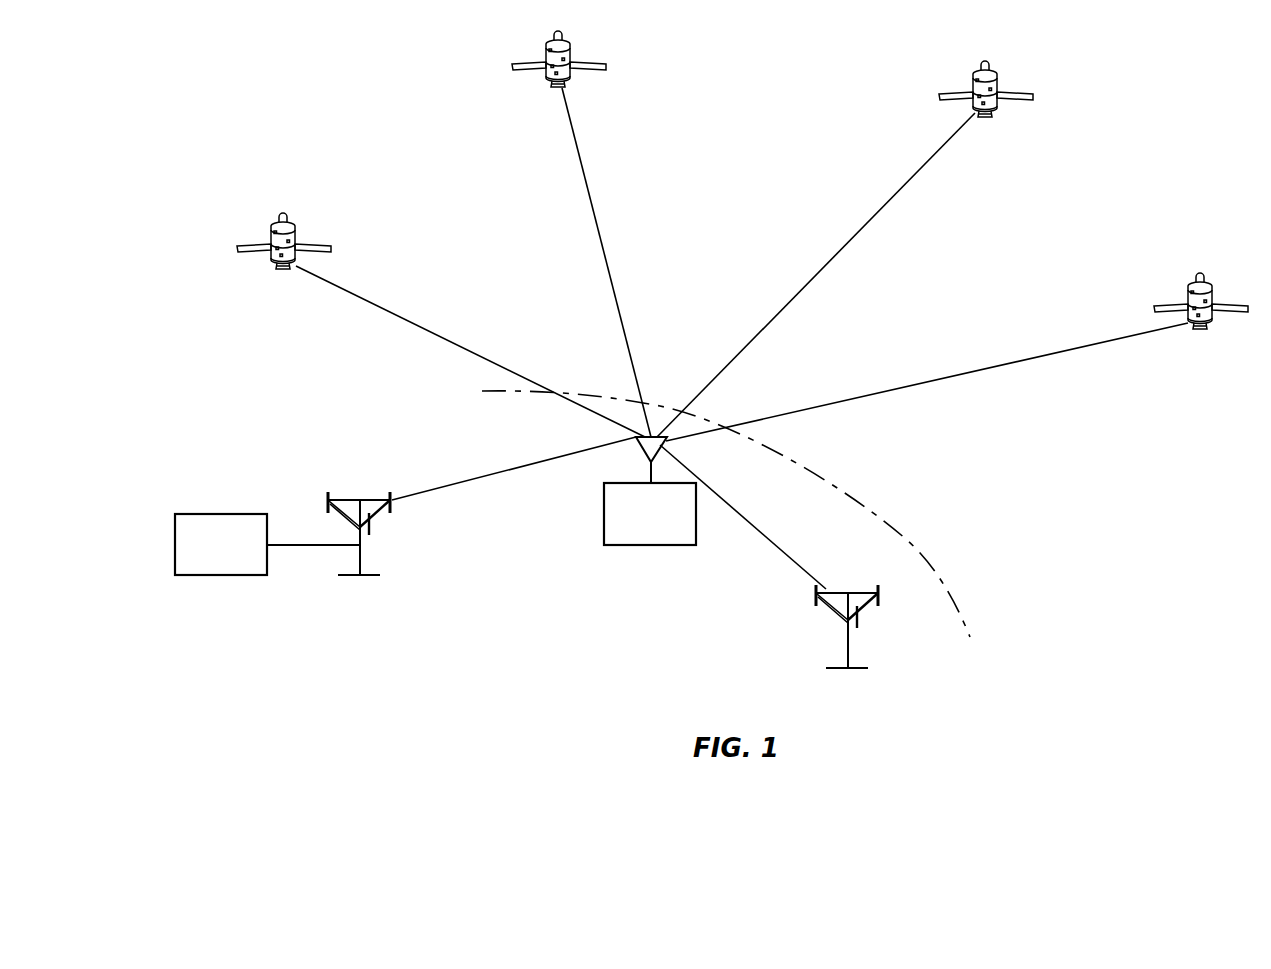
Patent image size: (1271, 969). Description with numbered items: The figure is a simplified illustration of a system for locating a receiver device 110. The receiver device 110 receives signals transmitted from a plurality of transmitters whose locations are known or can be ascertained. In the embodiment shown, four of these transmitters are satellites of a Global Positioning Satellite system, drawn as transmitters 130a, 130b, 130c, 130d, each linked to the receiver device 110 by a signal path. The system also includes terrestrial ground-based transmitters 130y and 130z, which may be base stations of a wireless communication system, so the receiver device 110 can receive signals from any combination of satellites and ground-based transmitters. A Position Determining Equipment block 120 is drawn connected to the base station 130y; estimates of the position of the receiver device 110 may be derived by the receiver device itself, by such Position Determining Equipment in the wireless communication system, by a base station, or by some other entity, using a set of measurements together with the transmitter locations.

The receiver device 110 is at (604, 518).
The position determining entity (PDE) 120 is at (215, 514).
The transmitter 130a is at (295, 246).
The transmitter 130b is at (570, 63).
The transmitter 130c is at (997, 93).
The transmitter 130d is at (1211, 306).
The transmitter 130y is at (356, 499).
The transmitter 130z is at (846, 592).